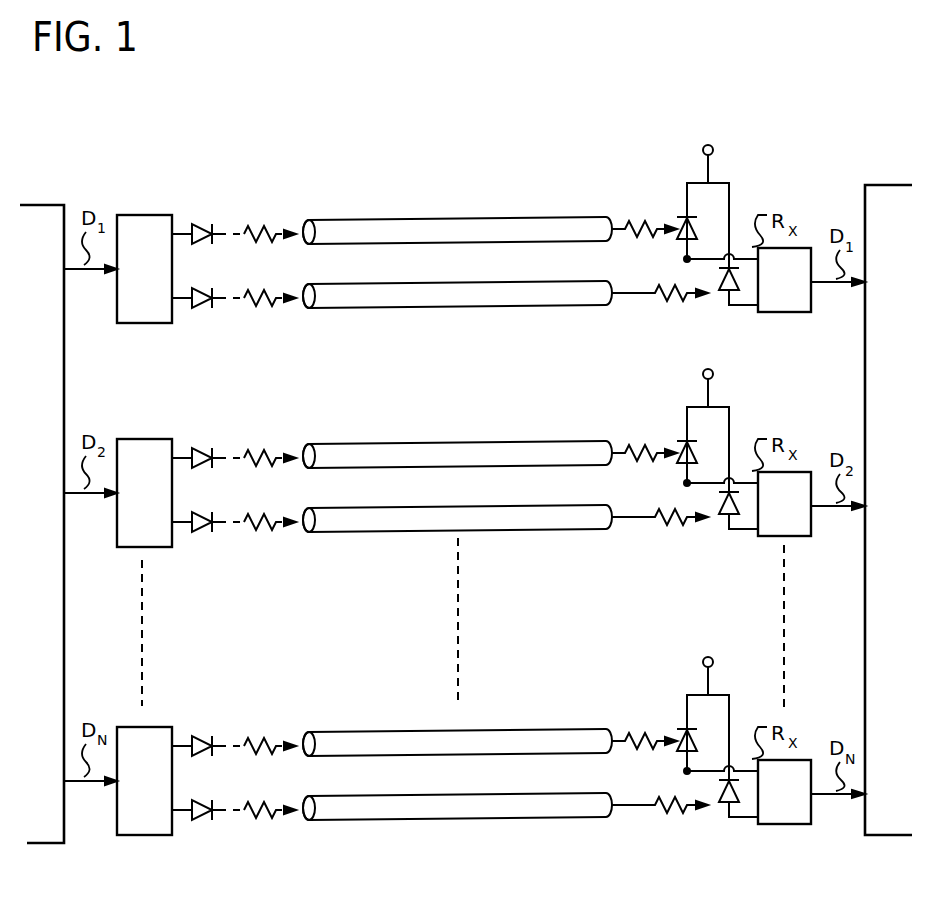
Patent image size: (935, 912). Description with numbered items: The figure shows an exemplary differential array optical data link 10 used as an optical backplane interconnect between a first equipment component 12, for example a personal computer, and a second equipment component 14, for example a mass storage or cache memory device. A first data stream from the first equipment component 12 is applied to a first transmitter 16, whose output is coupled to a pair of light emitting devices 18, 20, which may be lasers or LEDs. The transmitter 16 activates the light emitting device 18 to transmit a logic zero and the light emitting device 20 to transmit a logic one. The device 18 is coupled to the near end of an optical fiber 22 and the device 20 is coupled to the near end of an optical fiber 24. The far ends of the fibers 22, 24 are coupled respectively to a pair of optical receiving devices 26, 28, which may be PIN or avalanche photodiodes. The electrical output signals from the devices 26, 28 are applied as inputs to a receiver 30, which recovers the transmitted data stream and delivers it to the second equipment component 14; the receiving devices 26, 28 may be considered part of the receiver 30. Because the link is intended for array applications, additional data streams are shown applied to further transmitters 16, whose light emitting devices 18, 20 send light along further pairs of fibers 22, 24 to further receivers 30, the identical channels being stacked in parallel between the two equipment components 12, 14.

The differential array optical data link 10 is at (447, 886).
The first equipment component 12 is at (42, 524).
The second equipment component 14 is at (888, 510).
The transmitter 16 is at (144, 525).
The light emitting device 18 is at (202, 224).
The light emitting device 20 is at (200, 310).
The optical fiber 22 is at (428, 220).
The optical fiber 24 is at (428, 284).
The optical receiving device 26 is at (683, 725).
The optical receiving device 28 is at (694, 835).
The receiver 30 is at (784, 536).